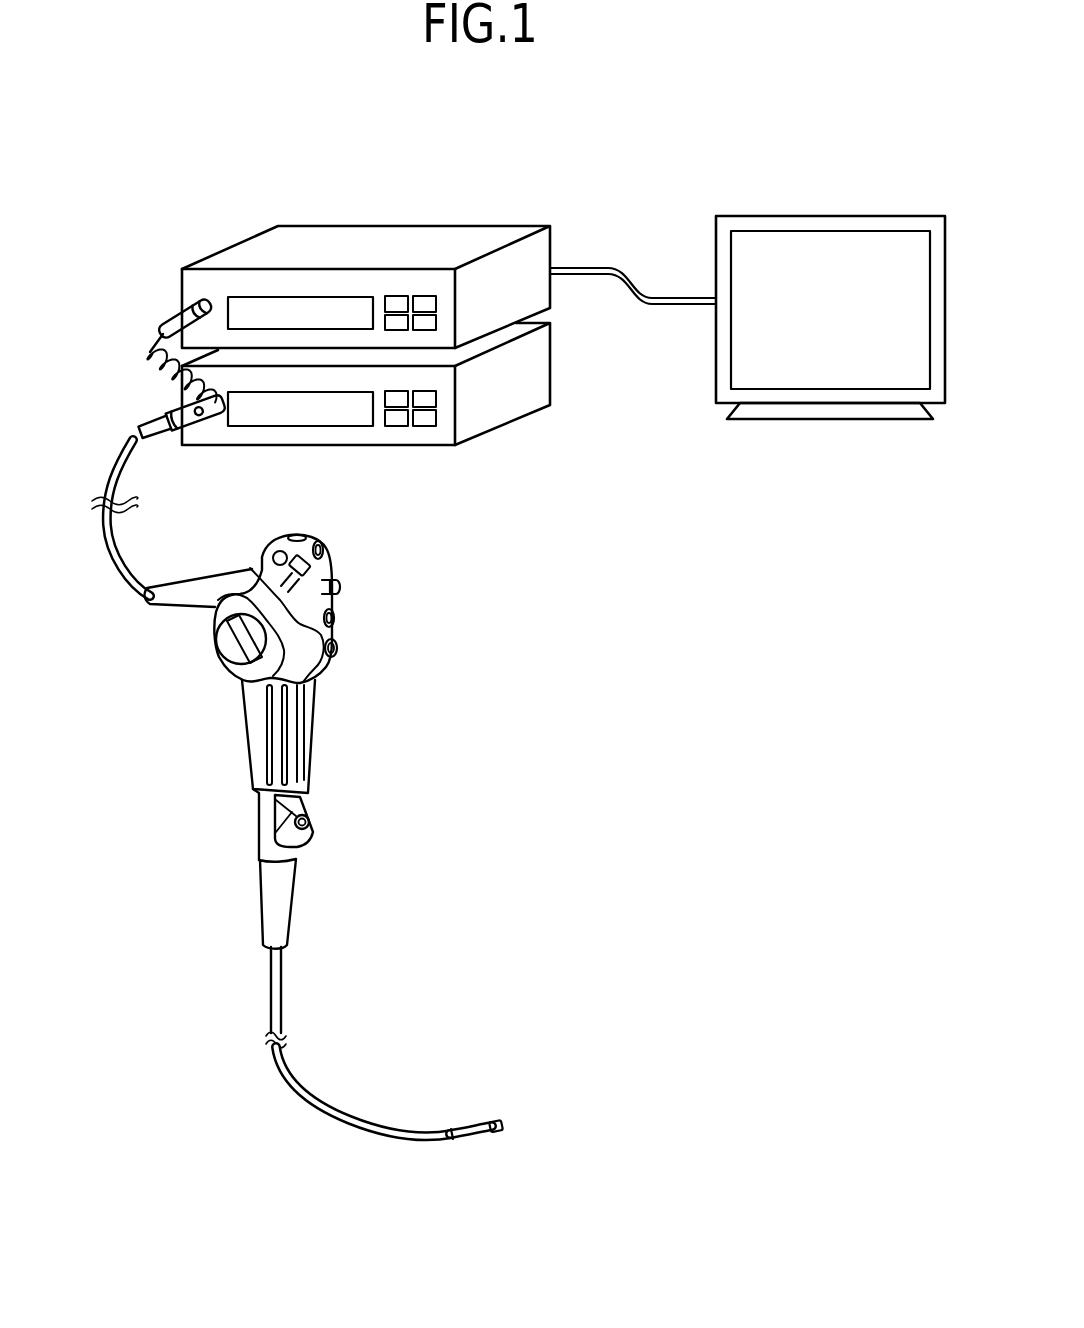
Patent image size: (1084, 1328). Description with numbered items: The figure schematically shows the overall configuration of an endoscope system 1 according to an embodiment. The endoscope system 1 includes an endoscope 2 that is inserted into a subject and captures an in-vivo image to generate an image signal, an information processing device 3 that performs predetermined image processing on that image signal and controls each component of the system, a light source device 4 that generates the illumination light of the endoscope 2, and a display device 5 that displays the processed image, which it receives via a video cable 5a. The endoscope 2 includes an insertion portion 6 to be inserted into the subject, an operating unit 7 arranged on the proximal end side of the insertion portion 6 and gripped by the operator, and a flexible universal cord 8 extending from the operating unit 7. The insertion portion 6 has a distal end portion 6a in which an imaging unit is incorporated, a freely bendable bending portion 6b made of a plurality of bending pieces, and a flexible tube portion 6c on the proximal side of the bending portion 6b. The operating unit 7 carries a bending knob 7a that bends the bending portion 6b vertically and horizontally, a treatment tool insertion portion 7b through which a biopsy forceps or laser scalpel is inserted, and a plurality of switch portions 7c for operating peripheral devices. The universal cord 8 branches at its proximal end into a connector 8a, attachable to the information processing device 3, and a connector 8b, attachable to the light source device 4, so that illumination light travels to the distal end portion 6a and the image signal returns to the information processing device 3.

The endoscope system 1 is at (875, 139).
The endoscope 2 is at (445, 682).
The information processing device 3 is at (513, 233).
The light source device 4 is at (551, 361).
The display device 5 is at (830, 225).
The video cable 5a is at (612, 268).
The insertion portion 6 is at (503, 1207).
The distal end portion 6a is at (498, 1133).
The bending portion 6b is at (467, 1137).
The flexible tube portion 6c is at (328, 1117).
The operating unit 7 is at (334, 633).
The bending knob 7a is at (230, 663).
The treatment tool insertion portion 7b is at (313, 817).
The switch portions 7c is at (307, 525).
The universal cord 8 is at (108, 540).
The connector 8a is at (186, 296).
The connector 8b is at (170, 398).